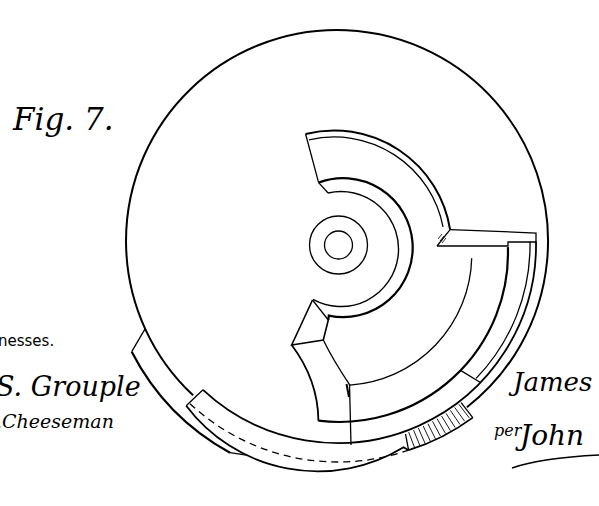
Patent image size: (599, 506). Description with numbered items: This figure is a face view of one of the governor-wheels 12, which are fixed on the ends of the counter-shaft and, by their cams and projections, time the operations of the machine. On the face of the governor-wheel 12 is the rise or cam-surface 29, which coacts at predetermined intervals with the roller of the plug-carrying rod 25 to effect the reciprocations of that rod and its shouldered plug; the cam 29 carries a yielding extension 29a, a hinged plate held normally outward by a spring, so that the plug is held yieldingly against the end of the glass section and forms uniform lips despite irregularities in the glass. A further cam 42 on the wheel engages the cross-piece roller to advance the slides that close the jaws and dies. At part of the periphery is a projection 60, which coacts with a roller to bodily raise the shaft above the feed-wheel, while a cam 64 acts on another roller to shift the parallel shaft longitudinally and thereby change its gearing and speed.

The governor-wheel 12 is at (337, 246).
The horizontally-reciprocative rod 25 is at (378, 225).
The cam-surface 29 is at (513, 288).
The yielding extension 29a is at (414, 407).
The cam 42 is at (384, 339).
The projection 60 is at (163, 388).
The cam 64 is at (408, 449).